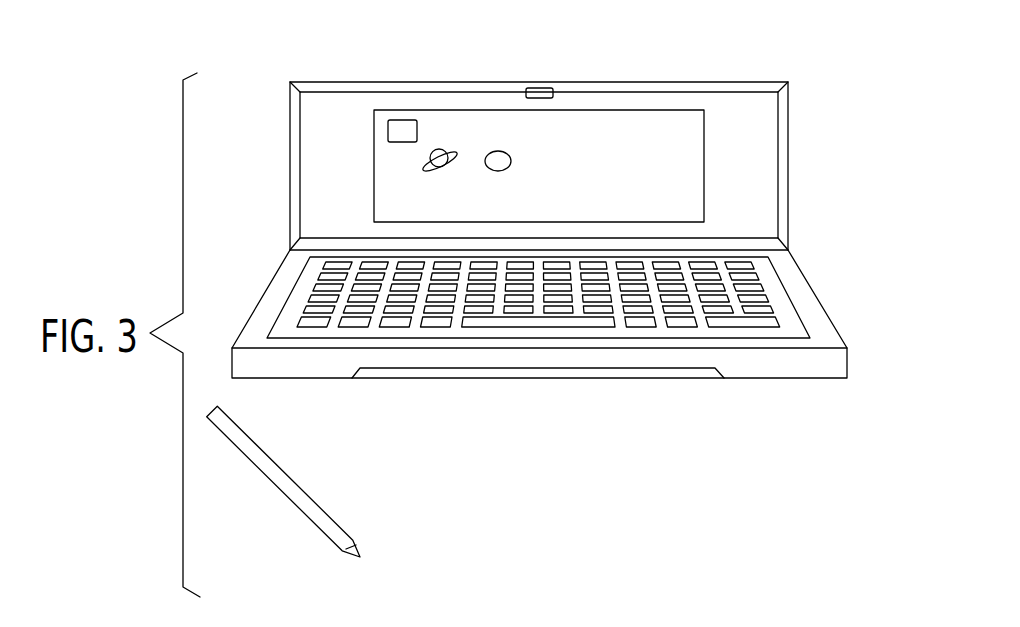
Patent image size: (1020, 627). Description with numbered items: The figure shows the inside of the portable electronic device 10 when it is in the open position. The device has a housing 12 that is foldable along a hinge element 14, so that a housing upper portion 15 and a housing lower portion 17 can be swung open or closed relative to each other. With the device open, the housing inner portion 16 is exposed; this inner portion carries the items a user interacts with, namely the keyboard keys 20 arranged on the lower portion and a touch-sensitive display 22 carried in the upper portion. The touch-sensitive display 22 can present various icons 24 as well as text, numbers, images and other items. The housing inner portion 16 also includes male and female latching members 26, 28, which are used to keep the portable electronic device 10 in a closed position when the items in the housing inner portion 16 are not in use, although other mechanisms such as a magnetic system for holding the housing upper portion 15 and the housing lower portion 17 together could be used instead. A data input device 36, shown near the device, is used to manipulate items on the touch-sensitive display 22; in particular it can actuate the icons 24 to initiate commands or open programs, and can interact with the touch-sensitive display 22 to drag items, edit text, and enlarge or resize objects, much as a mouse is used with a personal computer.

The portable electronic device 10 is at (813, 82).
The housing 12 is at (790, 163).
The hinge element 14 is at (782, 263).
The housing upper portion 15 is at (348, 82).
The housing inner portion 16 is at (705, 334).
The housing lower portion 17 is at (300, 362).
The keyboard keys 20 is at (440, 307).
The touch-sensitive display 22 is at (472, 122).
The icons 24 is at (388, 129).
The male latching member 26 is at (535, 86).
The female latching member 28 is at (552, 380).
The data input device 36 is at (258, 477).